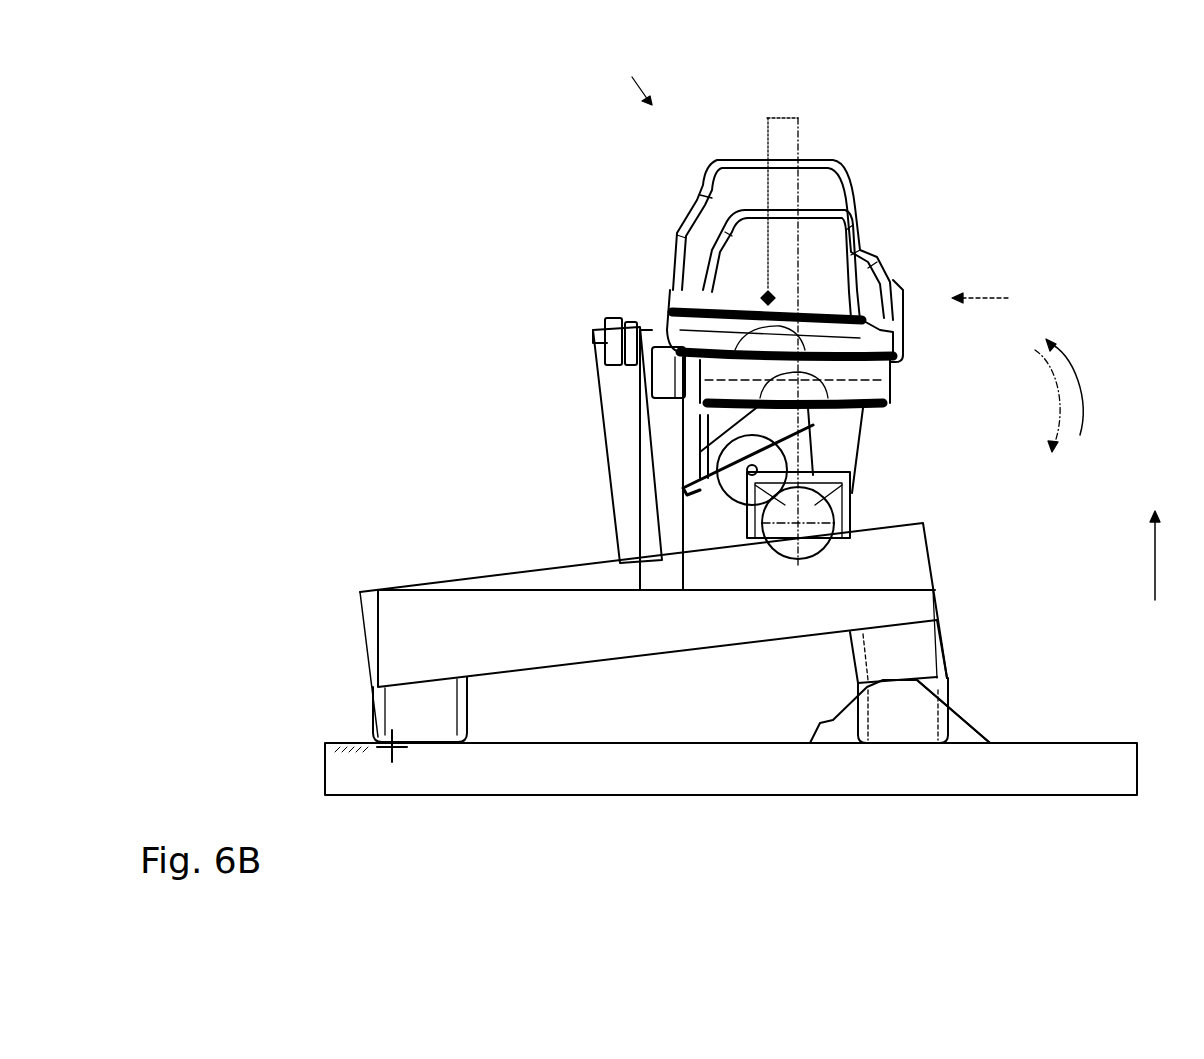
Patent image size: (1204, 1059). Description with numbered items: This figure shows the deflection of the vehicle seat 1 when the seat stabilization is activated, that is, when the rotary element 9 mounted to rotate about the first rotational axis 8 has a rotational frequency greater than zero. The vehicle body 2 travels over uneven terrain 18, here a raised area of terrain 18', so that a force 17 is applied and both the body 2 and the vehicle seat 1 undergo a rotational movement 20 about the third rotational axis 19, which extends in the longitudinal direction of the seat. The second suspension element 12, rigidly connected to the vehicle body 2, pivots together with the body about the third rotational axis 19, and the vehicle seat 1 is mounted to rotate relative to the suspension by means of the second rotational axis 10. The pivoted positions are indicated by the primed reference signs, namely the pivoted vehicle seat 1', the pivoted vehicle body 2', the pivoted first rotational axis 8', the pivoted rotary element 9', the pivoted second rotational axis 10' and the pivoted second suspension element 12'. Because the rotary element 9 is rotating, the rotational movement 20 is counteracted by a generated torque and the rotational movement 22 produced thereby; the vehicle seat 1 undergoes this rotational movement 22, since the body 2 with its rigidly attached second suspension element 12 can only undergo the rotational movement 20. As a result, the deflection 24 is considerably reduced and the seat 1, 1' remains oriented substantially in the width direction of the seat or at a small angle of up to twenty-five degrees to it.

The vehicle seat 1 is at (987, 298).
The vehicle seat in pivoted position 1' is at (635, 80).
The vehicle body 2 is at (682, 658).
The vehicle body in pivoted position 2' is at (671, 620).
The first rotational axis 8 is at (822, 521).
The first rotational axis in pivoted position 8' is at (667, 441).
The rotary element 9 is at (822, 489).
The rotary element in pivoted position 9' is at (693, 459).
The second rotational axis 10 is at (802, 426).
The second rotational axis in pivoted position 10' is at (811, 265).
The second suspension element 12 is at (630, 460).
The second suspension element in pivoted position 12' is at (601, 440).
The force 17 is at (1155, 565).
The uneven terrain 18 is at (958, 711).
The raised area of terrain 18' is at (953, 711).
The third rotational axis 19 is at (387, 752).
The rotational movement 20 is at (1080, 388).
The rotational movement generated by torque 22 is at (1033, 401).
The deflection 24 is at (783, 118).